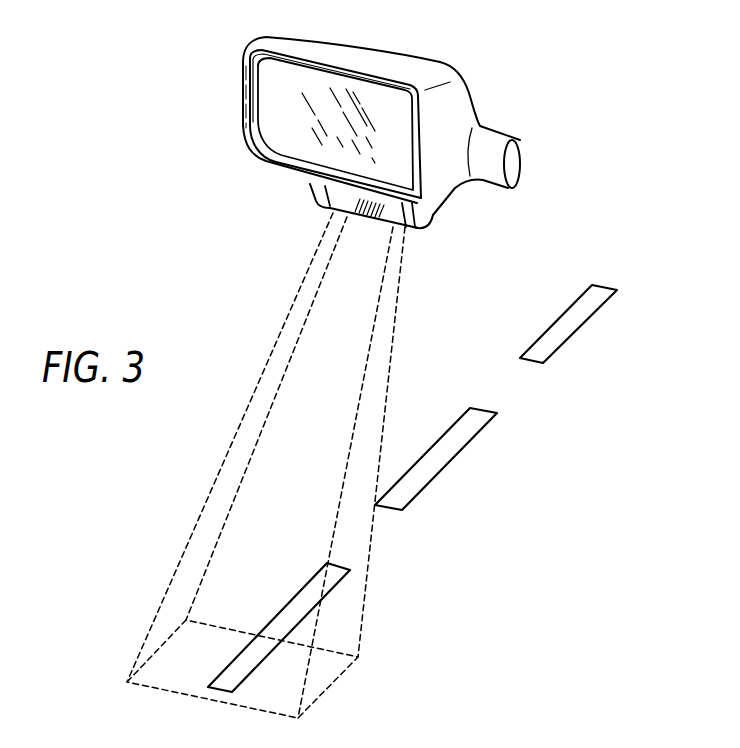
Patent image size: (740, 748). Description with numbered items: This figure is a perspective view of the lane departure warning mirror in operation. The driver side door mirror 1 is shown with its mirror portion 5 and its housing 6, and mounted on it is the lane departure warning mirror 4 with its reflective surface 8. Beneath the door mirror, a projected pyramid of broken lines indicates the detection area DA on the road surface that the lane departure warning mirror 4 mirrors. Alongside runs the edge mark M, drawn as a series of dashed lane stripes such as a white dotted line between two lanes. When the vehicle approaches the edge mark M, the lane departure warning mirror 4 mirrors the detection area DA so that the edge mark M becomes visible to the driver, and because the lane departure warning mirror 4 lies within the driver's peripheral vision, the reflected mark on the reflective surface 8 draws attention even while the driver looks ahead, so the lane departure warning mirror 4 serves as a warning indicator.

The driver side door mirror 1 is at (489, 63).
The lane departure warning mirror 4 is at (428, 217).
The mirror portion 5 is at (275, 97).
The housing 6 is at (380, 60).
The reflective surface 8 is at (347, 204).
The detection area DA is at (182, 662).
The edge mark M is at (695, 343).